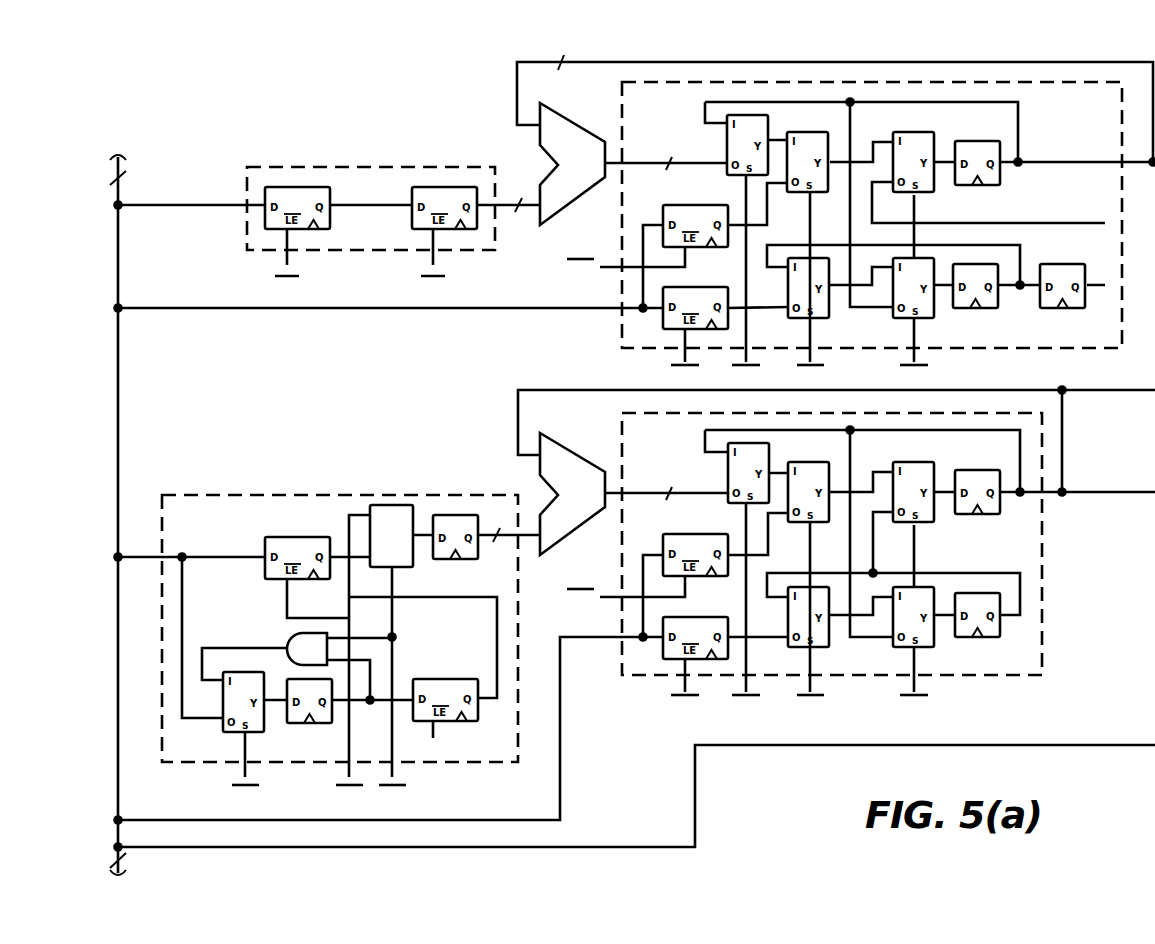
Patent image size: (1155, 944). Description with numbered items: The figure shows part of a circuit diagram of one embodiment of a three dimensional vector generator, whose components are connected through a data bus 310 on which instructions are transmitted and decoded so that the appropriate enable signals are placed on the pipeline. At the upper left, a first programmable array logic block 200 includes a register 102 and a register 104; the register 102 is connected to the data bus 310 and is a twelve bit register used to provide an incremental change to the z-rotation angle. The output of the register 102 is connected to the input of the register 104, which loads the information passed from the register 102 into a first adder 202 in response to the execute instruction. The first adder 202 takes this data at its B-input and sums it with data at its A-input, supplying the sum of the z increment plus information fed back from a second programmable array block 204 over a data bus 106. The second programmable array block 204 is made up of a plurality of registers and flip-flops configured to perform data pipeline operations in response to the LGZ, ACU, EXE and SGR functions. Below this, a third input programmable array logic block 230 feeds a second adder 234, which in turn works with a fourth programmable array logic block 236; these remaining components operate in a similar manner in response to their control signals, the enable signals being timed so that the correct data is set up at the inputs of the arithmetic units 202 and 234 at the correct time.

The register 102 is at (318, 187).
The register 104 is at (412, 210).
The data bus 106 is at (793, 62).
The first programmable array logic block 200 is at (362, 165).
The first adder 202 is at (585, 135).
The second programmable array block 204 is at (930, 82).
The third input programmable array logic block 230 is at (358, 495).
The second adder 234 is at (585, 465).
The fourth programmable array logic block 236 is at (1042, 605).
The data bus 310 is at (120, 400).